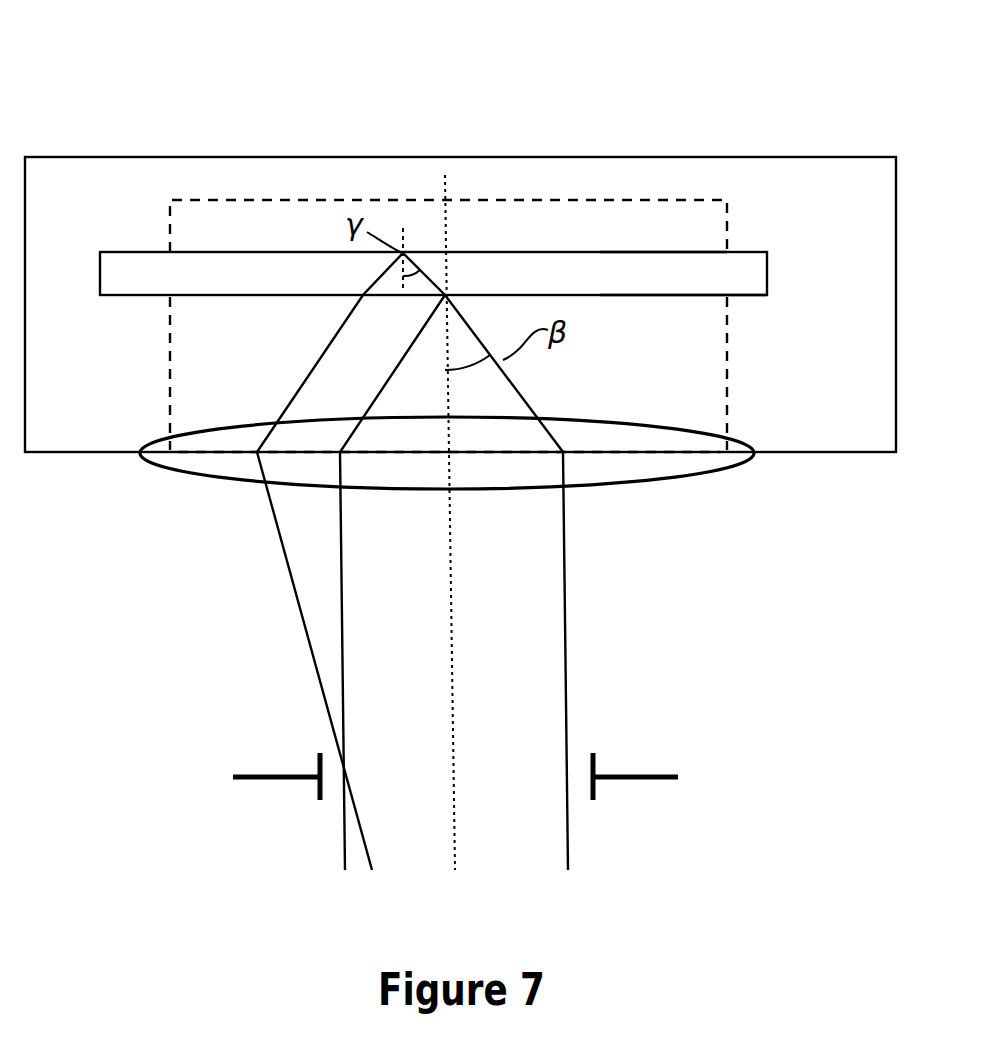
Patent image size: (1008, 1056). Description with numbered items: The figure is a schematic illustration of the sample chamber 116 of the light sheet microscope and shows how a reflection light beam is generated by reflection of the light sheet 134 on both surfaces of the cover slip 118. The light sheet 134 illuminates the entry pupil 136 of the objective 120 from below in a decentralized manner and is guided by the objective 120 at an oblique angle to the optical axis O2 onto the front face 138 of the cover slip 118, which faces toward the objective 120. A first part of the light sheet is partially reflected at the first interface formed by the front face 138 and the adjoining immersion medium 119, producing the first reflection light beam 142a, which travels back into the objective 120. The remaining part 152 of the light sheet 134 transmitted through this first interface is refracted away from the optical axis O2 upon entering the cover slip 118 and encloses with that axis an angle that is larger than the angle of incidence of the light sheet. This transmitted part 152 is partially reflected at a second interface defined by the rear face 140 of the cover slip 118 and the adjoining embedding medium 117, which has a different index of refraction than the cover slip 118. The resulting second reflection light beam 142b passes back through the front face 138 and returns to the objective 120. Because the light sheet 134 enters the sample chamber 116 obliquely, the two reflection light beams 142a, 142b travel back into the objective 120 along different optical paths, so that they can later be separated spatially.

The sample chamber 116 is at (834, 157).
The embedding medium 117 is at (170, 220).
The cover slip 118 is at (767, 260).
The immersion medium 119 is at (170, 335).
The objective 120 is at (790, 452).
The light sheet 134 is at (528, 403).
The entry pupil 136 is at (612, 767).
The front face 138 is at (745, 295).
The rear face 140 is at (724, 249).
The first reflection light beam 142a is at (407, 355).
The second reflection light beam 142b is at (378, 278).
The transmitted part of the light sheet 152 is at (430, 277).
The optical axis O2 is at (456, 850).